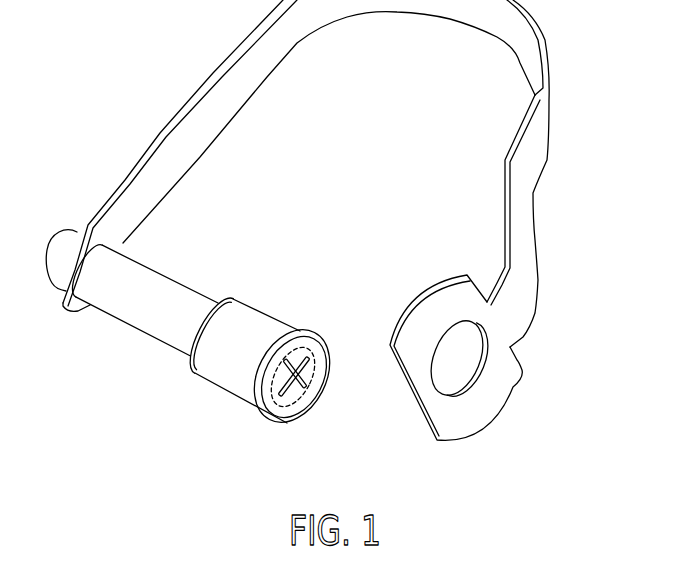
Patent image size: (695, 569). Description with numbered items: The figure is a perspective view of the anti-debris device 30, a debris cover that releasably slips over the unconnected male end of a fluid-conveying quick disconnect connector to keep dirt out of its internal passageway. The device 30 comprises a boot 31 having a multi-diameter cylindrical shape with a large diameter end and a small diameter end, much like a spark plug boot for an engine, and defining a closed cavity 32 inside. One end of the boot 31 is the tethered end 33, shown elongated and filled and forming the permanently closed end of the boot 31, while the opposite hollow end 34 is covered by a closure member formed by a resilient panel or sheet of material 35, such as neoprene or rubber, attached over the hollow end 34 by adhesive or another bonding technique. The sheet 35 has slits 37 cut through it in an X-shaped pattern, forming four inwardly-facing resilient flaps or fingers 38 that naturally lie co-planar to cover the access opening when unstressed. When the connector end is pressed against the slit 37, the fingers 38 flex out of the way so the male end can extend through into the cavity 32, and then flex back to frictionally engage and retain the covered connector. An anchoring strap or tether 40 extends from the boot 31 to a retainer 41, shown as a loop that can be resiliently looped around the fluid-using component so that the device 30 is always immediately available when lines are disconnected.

The anti-debris device 30 is at (80, 392).
The boot 31 is at (212, 373).
The closed cavity 32 is at (247, 328).
The tethered end 33 is at (108, 308).
The hollow end 34 is at (265, 310).
The resilient panel/sheet of material 35 is at (325, 342).
The slit 37 is at (310, 387).
The resilient flaps or fingers 38 is at (307, 356).
The anchoring strap or tether 40 is at (528, 157).
The retainer 41 is at (502, 400).